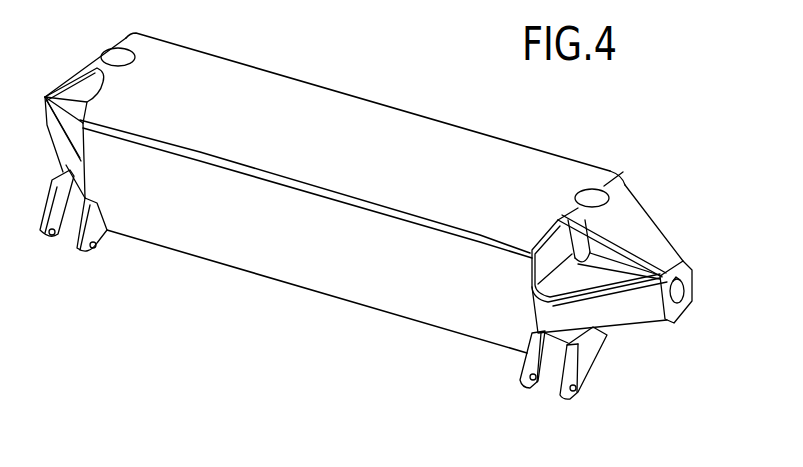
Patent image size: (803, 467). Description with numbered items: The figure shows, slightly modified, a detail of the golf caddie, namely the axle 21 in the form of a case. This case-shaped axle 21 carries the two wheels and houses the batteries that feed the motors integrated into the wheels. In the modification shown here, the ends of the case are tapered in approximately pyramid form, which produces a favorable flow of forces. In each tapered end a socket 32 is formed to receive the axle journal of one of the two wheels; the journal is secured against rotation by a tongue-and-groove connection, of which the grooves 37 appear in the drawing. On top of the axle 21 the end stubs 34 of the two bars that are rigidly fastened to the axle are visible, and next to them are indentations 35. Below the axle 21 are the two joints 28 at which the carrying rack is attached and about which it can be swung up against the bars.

The axle 21 is at (347, 152).
The joints 28 is at (63, 262).
The socket 32 is at (679, 311).
The end stubs of the bars 34 is at (133, 57).
The indentations 35 is at (557, 258).
The grooves 37 is at (685, 288).